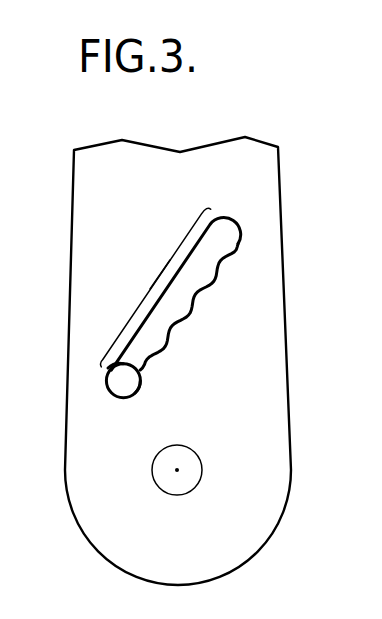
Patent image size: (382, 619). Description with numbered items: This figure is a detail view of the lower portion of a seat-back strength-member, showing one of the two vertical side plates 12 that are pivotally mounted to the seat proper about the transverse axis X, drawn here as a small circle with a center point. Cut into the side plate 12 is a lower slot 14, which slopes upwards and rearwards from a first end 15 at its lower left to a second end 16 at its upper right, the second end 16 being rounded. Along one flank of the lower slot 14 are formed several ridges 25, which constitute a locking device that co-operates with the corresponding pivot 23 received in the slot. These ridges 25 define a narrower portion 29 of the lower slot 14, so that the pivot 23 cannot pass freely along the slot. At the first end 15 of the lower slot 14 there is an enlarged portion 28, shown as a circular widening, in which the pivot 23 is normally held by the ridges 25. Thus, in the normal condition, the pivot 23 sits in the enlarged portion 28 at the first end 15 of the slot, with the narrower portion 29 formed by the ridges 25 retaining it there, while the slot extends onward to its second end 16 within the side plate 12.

The vertical side plate 12 is at (223, 165).
The second end 16 is at (232, 222).
The ridges 25 is at (218, 262).
The lower slot 14 is at (155, 300).
The narrower portion 29 is at (157, 277).
The first end 15 is at (108, 392).
The pivot 23 is at (114, 376).
The enlarged portion 28 is at (138, 388).
The transverse axis X is at (177, 470).